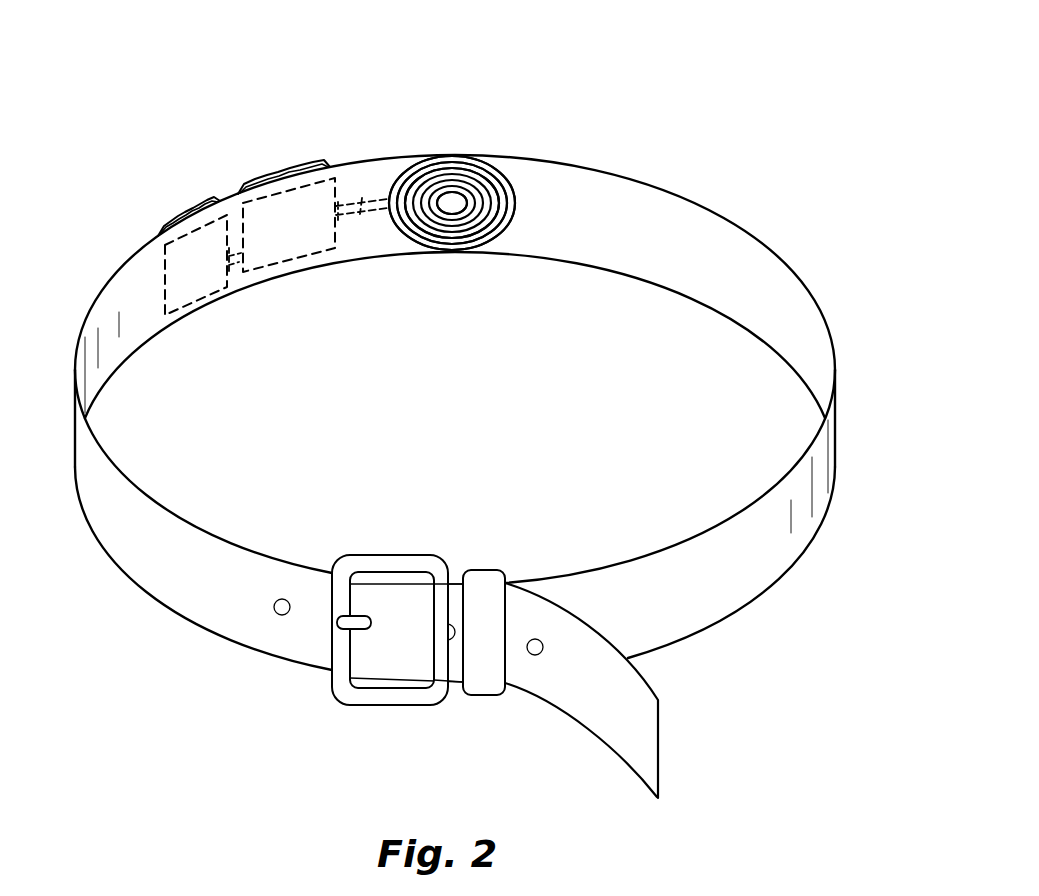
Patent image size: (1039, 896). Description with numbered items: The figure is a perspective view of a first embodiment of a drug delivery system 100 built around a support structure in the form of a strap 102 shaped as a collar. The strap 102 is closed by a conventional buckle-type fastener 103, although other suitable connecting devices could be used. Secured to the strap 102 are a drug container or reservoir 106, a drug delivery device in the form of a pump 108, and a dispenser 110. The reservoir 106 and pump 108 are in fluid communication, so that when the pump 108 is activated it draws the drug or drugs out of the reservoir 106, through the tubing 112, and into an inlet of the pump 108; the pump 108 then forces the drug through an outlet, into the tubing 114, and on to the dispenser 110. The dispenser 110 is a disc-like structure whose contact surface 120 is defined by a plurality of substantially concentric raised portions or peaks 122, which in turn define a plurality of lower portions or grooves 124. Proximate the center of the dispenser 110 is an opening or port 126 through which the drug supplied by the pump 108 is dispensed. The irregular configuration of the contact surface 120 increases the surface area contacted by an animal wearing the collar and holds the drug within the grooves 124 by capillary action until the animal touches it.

The drug delivery system 100 is at (465, 414).
The strap 102 is at (713, 230).
The buckle-type fastener 103 is at (376, 690).
The reservoir 106 is at (186, 206).
The pump 108 is at (283, 170).
The dispenser 110 is at (449, 200).
The tubing 112 is at (233, 270).
The tubing 114 is at (361, 218).
The contact surface 120 is at (448, 252).
The peaks 122 is at (486, 172).
The grooves 124 is at (505, 205).
The port 126 is at (450, 203).